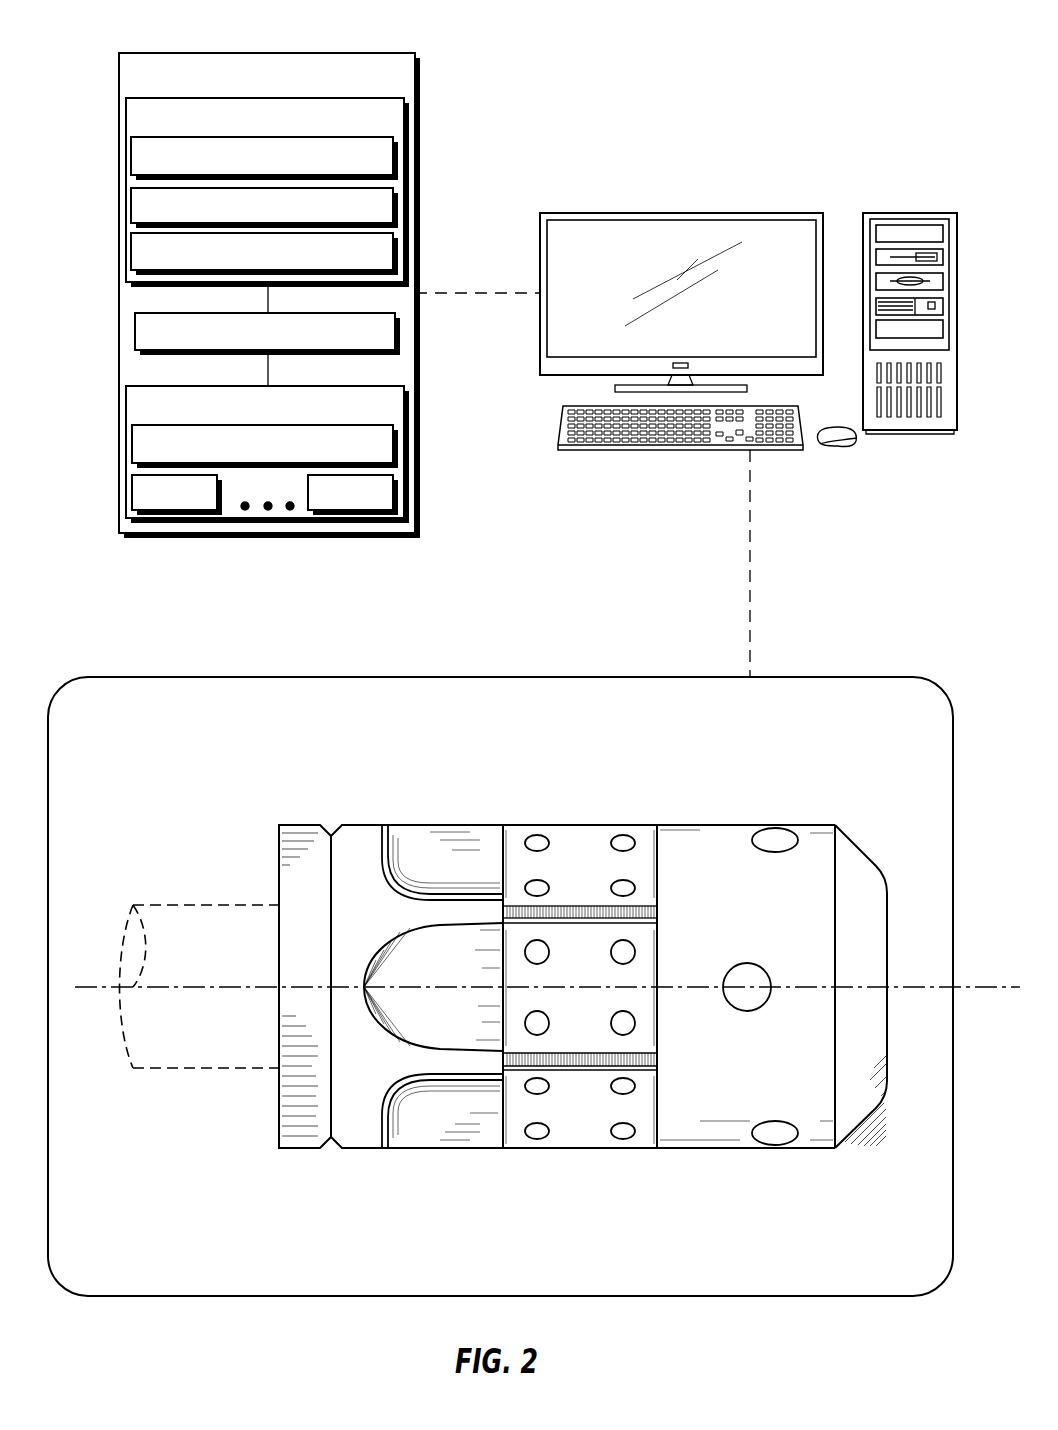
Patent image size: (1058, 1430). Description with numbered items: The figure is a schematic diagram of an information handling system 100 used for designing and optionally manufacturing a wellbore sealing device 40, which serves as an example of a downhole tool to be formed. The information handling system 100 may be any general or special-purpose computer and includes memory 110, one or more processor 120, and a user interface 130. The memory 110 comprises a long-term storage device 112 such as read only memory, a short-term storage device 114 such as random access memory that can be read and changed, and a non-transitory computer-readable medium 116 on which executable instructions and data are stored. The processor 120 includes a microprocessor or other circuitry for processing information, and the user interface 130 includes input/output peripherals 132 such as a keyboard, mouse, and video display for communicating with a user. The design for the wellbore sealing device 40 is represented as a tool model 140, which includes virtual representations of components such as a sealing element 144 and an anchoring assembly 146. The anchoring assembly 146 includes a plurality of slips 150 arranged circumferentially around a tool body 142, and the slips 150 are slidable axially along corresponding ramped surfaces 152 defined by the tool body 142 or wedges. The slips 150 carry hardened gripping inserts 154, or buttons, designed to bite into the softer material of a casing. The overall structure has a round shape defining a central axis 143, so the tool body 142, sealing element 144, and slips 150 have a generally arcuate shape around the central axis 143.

The information handling system 100 is at (237, 269).
The memory 110 is at (232, 178).
The long-term storage device 112 is at (131, 157).
The short-term storage device 114 is at (131, 203).
The non-transitory computer-readable medium 116 is at (131, 252).
The processor 120 is at (135, 332).
The user interface 130 is at (232, 449).
The input/output peripherals 132 is at (132, 444).
The tool model 140 is at (450, 677).
The wellbore sealing device 40 is at (541, 925).
The tool body 142 is at (205, 905).
The central axis 143 is at (100, 985).
The sealing element 144 is at (300, 825).
The anchoring assembly 146 is at (572, 923).
The slips 150 is at (652, 968).
The ramped surfaces 152 is at (460, 943).
The gripping inserts 154 is at (623, 950).